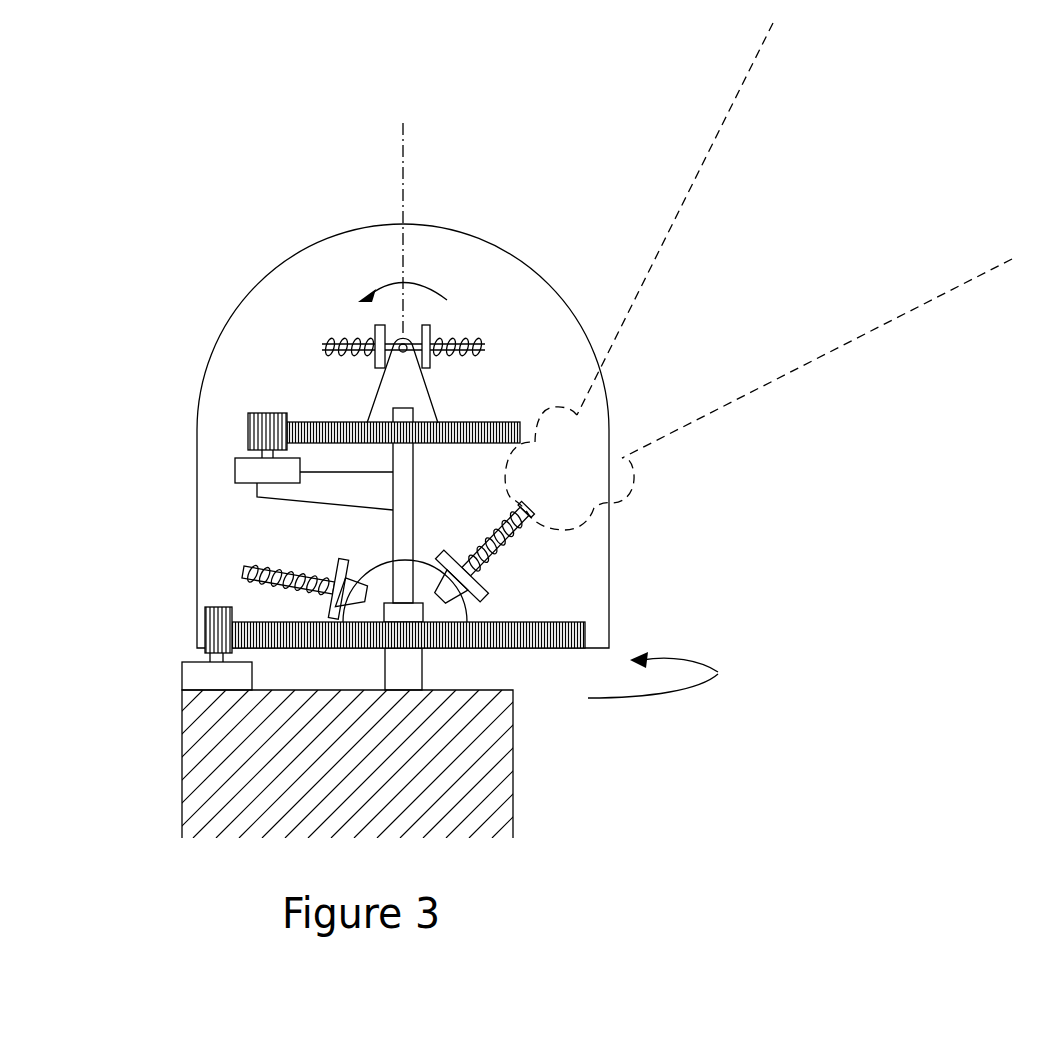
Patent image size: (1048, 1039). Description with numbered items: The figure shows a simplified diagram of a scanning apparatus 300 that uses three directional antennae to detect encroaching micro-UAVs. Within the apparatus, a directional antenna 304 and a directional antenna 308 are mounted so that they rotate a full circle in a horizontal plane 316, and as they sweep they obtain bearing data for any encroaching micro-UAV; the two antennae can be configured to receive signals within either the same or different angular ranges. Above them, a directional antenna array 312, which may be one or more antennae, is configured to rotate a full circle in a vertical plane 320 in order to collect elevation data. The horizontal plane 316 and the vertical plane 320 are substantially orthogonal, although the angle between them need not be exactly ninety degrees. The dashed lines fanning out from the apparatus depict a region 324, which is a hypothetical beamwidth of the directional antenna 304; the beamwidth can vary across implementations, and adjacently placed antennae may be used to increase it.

The scanning apparatus 300 is at (178, 180).
The directional antenna 304 is at (528, 528).
The directional antenna 308 is at (262, 565).
The directional antenna array 312 is at (470, 338).
The horizontal plane 316 is at (718, 672).
The vertical plane 320 is at (403, 154).
The region 324 is at (771, 282).